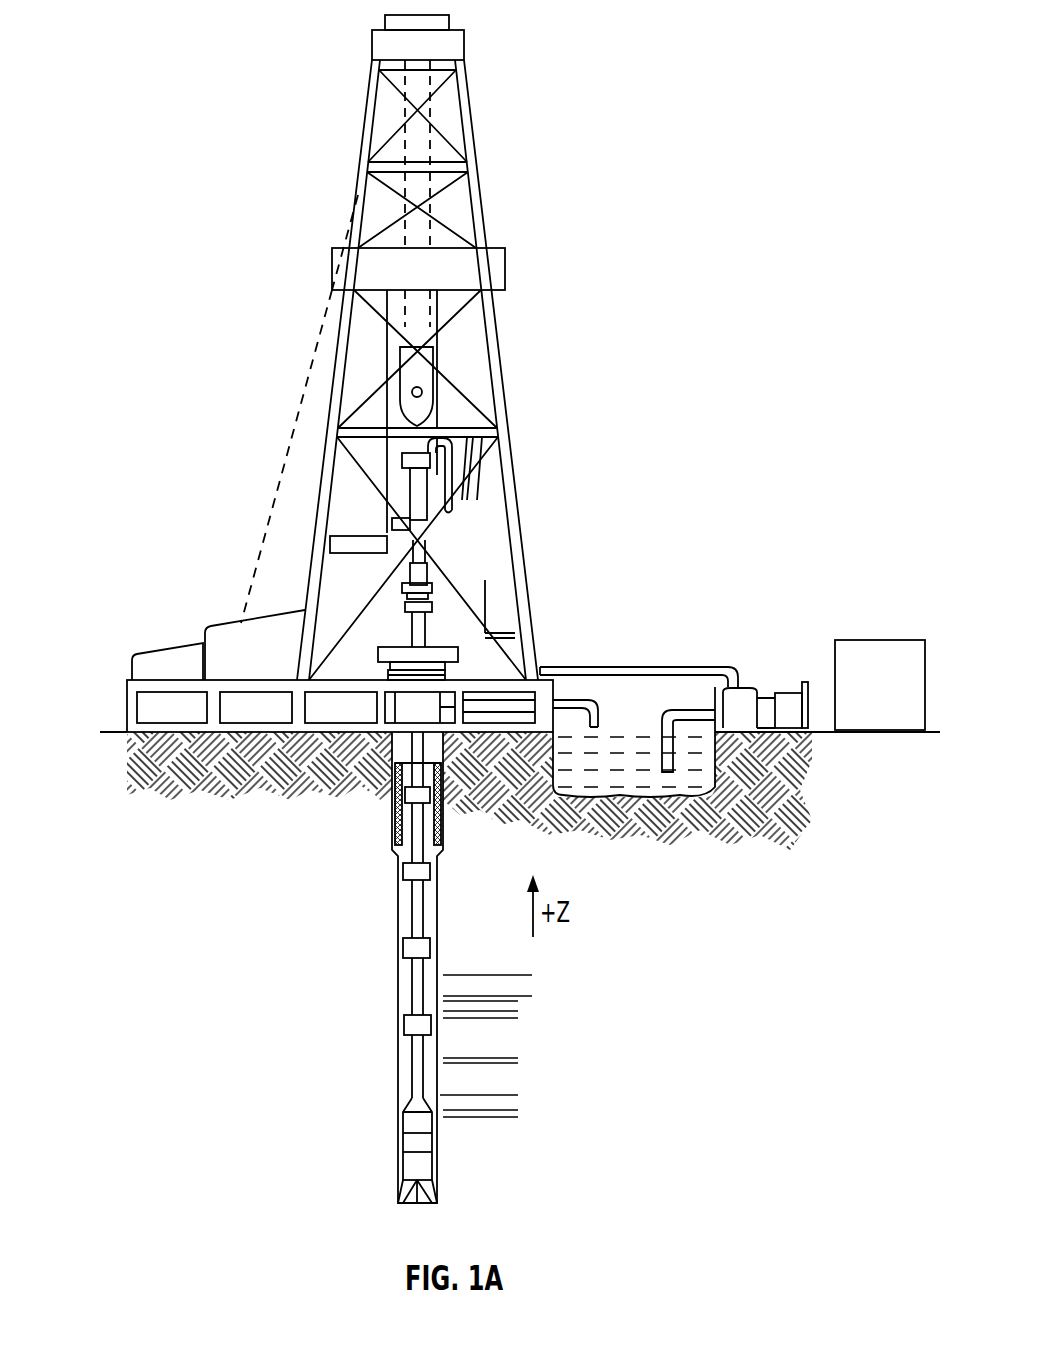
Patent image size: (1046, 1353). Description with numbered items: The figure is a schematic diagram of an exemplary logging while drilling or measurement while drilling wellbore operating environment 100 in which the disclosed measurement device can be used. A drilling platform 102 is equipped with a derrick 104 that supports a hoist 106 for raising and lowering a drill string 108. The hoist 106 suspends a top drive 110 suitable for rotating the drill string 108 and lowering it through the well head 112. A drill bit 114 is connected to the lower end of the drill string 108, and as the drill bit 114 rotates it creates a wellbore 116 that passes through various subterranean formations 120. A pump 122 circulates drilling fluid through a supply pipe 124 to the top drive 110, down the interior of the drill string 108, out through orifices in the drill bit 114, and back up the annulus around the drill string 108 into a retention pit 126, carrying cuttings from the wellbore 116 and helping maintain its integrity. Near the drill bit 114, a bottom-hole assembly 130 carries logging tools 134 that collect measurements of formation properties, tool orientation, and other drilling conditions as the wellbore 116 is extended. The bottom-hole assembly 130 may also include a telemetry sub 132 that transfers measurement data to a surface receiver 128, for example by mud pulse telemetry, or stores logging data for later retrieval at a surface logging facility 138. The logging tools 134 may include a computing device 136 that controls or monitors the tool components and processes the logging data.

The wellbore operating environment 100 is at (326, 58).
The drilling platform 102 is at (128, 690).
The derrick 104 is at (468, 172).
The hoist 106 is at (423, 410).
The drill string 108 is at (413, 892).
The top drive 110 is at (418, 500).
The well head 112 is at (447, 652).
The drill bit 114 is at (432, 1182).
The wellbore 116 is at (438, 917).
The subterranean formations 120 is at (541, 967).
The pump 122 is at (740, 690).
The supply pipe 124 is at (647, 667).
The retention pit 126 is at (625, 777).
The surface receiver 128 is at (423, 558).
The bottom-hole assembly 130 is at (353, 1153).
The telemetry sub 132 is at (403, 1120).
The logging tools 134 is at (403, 1142).
The computing device 136 is at (403, 1153).
The logging facility 138 is at (880, 652).